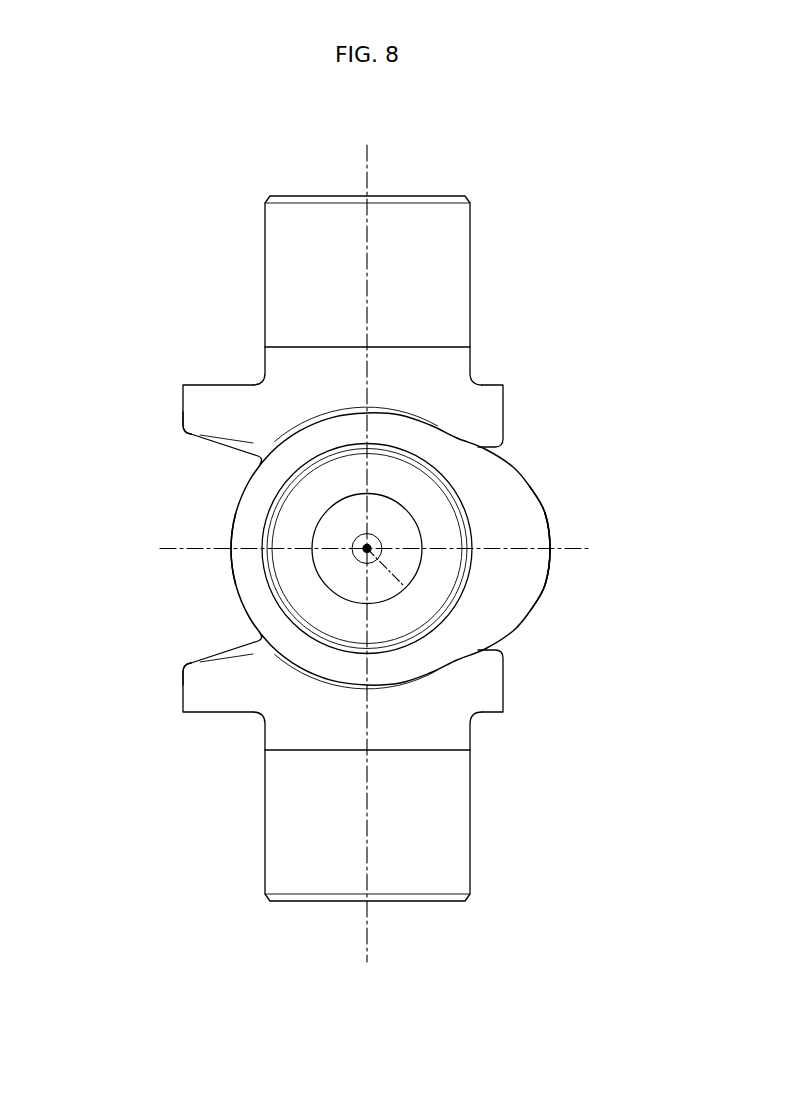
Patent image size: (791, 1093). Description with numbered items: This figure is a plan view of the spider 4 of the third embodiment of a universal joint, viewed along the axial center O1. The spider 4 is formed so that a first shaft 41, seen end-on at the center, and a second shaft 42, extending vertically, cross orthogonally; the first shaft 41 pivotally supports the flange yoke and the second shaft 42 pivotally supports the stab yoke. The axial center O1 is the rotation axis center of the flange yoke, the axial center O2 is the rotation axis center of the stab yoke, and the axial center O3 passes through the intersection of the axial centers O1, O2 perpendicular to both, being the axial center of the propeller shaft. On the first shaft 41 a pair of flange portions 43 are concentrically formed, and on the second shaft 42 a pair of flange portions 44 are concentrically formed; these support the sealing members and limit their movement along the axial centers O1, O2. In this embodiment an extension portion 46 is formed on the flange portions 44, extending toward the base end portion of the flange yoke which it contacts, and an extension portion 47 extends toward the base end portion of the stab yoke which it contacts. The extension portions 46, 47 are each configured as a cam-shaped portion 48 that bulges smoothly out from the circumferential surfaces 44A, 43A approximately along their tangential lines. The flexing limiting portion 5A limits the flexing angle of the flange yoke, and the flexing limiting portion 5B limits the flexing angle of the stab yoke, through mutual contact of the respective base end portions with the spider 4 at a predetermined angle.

The spider 4 is at (183, 262).
The first shaft 41 is at (303, 508).
The second shaft 42 is at (418, 267).
The flange portion 43 is at (252, 517).
The circumferential surface 43A is at (233, 583).
The flange portion 44 is at (482, 405).
The circumferential surface 44A is at (502, 425).
The extension portion 46 is at (172, 409).
The extension portion 47 is at (559, 515).
The cam-shaped portion 48 is at (207, 402).
The flexing limiting portion 5A is at (163, 437).
The flexing limiting portion 5B is at (560, 566).
The axial center O1 is at (403, 585).
The axial center O2 is at (364, 540).
The axial center O3 is at (391, 548).